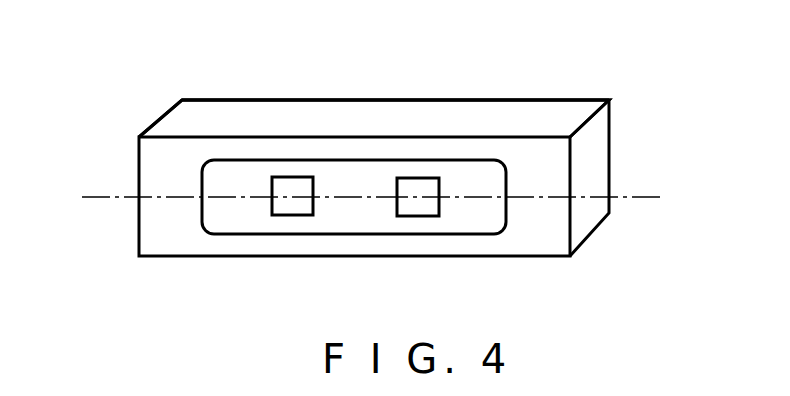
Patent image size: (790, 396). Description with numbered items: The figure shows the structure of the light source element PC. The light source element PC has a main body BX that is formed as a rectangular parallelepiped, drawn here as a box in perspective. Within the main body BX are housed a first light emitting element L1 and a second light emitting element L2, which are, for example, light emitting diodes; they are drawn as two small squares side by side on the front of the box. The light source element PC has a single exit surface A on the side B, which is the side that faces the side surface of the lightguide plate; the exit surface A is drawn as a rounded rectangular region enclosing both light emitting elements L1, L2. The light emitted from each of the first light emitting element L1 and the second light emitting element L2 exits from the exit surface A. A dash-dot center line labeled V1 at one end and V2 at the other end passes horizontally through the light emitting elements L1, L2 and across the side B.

The side B is at (164, 157).
The main body BX is at (250, 115).
The light source element PC is at (551, 73).
The exit surface A is at (488, 214).
The virtual line end V1 is at (215, 197).
The virtual line end V2 is at (537, 198).
The first light emitting element L1 is at (293, 207).
The second light emitting element L2 is at (418, 207).